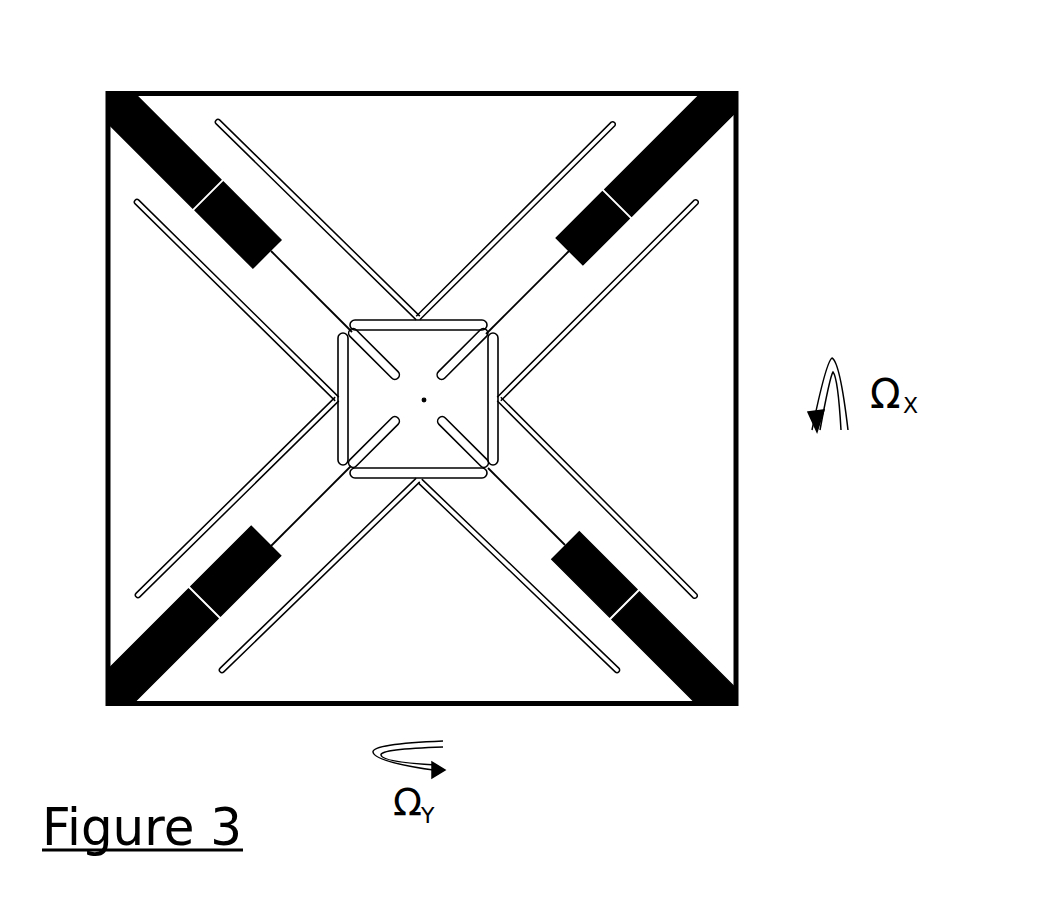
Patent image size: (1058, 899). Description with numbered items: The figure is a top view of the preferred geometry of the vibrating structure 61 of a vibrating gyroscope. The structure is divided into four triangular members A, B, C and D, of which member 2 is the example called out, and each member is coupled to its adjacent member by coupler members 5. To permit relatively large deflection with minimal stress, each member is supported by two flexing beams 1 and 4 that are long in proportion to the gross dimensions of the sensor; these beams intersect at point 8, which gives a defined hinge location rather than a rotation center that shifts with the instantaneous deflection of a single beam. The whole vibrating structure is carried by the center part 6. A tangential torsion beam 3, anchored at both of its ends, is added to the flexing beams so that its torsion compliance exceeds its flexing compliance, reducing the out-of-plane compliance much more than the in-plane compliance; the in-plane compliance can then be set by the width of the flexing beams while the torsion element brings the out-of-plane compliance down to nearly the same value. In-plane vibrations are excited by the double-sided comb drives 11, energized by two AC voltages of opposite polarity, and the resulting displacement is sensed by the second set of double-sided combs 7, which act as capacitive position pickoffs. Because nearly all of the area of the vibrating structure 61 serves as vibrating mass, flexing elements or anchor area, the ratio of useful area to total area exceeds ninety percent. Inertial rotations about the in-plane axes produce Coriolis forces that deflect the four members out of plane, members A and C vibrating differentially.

The flexing beam 1 is at (220, 298).
The member 2 is at (180, 352).
The tangential torsion beam 3 is at (337, 435).
The flexing beam 4 is at (250, 483).
The coupler member 5 is at (458, 363).
The center part 6 is at (500, 402).
The double-sided comb 7 is at (222, 240).
The point 8 is at (335, 402).
The double-sided comb drive 11 is at (188, 140).
The vibrating structure 61 is at (410, 92).
The member A is at (153, 508).
The member B is at (477, 163).
The member C is at (672, 508).
The member D is at (510, 667).